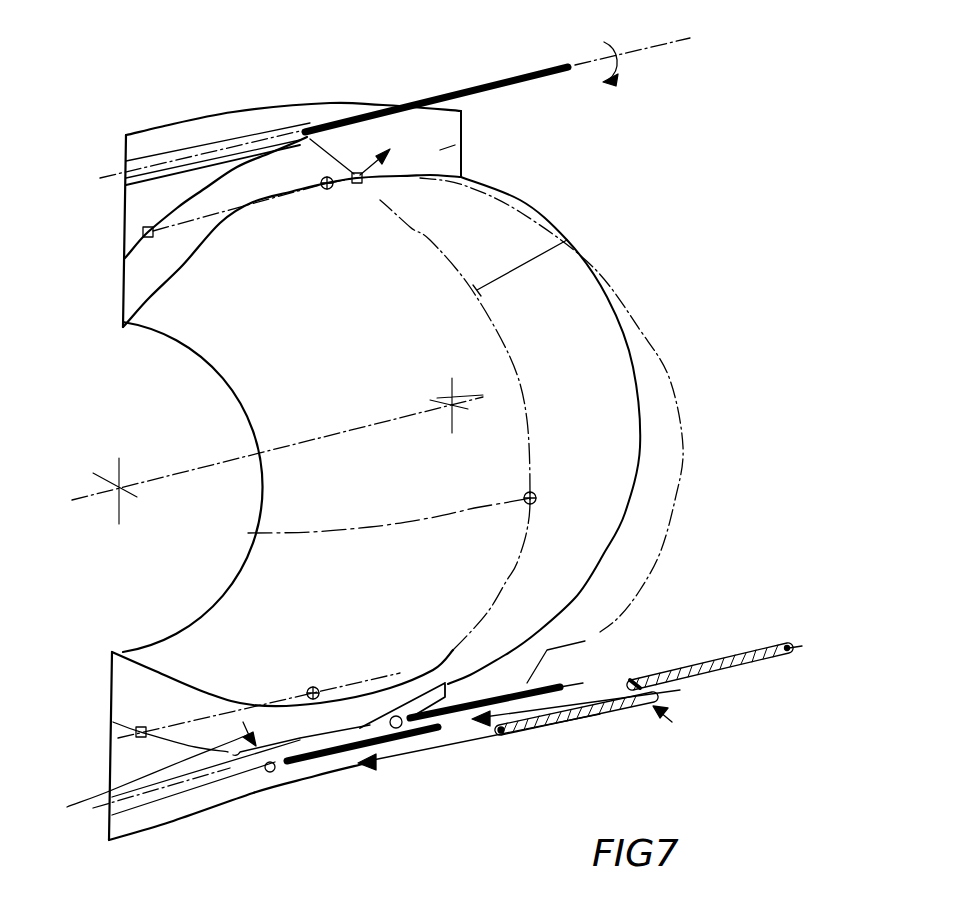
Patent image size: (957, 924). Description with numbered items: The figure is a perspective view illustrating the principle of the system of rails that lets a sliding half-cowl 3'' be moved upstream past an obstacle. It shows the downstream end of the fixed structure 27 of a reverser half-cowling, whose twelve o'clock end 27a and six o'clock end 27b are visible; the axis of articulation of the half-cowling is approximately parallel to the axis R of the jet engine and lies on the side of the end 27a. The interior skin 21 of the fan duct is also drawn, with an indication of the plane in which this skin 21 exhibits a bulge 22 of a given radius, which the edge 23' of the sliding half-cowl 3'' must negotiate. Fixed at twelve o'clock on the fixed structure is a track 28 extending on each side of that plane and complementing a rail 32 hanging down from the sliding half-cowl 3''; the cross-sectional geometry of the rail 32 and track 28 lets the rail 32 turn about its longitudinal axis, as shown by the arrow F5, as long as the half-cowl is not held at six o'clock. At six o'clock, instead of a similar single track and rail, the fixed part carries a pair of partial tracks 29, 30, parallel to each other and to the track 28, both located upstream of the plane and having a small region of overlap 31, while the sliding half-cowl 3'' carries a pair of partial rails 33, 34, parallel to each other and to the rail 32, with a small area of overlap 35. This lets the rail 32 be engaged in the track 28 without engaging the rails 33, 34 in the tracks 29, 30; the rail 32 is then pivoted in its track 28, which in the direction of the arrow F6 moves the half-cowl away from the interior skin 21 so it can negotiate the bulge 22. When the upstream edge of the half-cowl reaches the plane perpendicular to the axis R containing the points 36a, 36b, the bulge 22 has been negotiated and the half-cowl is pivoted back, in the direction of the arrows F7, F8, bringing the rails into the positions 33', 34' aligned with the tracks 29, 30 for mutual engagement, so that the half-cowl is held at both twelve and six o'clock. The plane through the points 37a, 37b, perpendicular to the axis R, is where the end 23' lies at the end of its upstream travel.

The interior skin 21 is at (259, 487).
The bulge 22 is at (567, 240).
The edge of the sliding half-cowl 23' is at (585, 405).
The fixed structure 27 is at (378, 94).
The 12 o'clock end of the fixed structure 27a is at (447, 143).
The 6 o'clock end of the fixed structure 27b is at (438, 688).
The track 28 is at (202, 150).
The partial track 29 is at (282, 767).
The partial track 30 is at (183, 790).
The region of overlap 31 is at (138, 784).
The rail 32 is at (518, 67).
The partial rail 33 is at (714, 684).
The position of partial rail 33 33' is at (496, 747).
The partial rail 34 is at (576, 740).
The position of partial rail 34 34' is at (362, 784).
The area of overlap 35 is at (660, 712).
The point 36a is at (273, 199).
The point 36b is at (270, 703).
The point 37a is at (143, 233).
The point 37b is at (136, 727).
The sliding half-cowl 3'' is at (612, 650).
The axis of the jet engine R is at (122, 488).
The arrow F5 is at (640, 66).
The arrow F6 is at (388, 155).
The arrow F7 is at (580, 700).
The arrow F8 is at (420, 753).